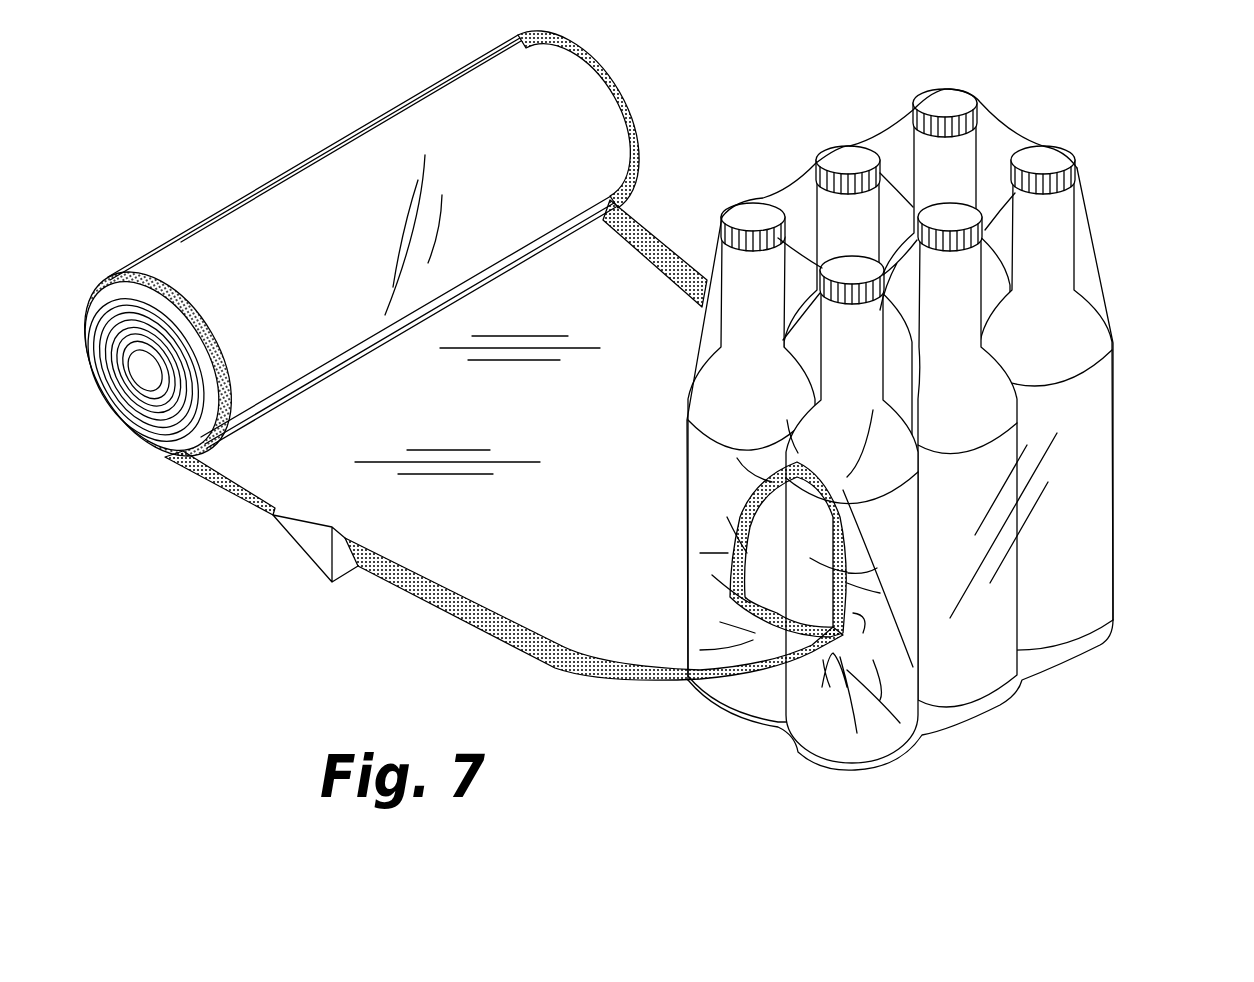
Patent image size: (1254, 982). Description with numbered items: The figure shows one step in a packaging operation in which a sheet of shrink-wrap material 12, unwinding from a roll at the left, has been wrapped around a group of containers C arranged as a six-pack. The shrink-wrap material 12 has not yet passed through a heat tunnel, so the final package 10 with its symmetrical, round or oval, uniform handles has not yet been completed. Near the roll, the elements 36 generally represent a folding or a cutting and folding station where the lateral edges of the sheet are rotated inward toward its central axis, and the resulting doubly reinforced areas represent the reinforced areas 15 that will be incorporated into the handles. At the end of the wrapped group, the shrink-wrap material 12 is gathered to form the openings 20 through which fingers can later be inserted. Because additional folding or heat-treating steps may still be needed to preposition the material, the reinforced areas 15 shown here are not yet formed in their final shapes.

The package 10 is at (1123, 137).
The shrink-wrap material 12 is at (583, 556).
The reinforced areas 15 is at (520, 632).
The openings 20 is at (923, 697).
The folding or cutting and folding station 36 is at (314, 543).
The containers C is at (1062, 352).